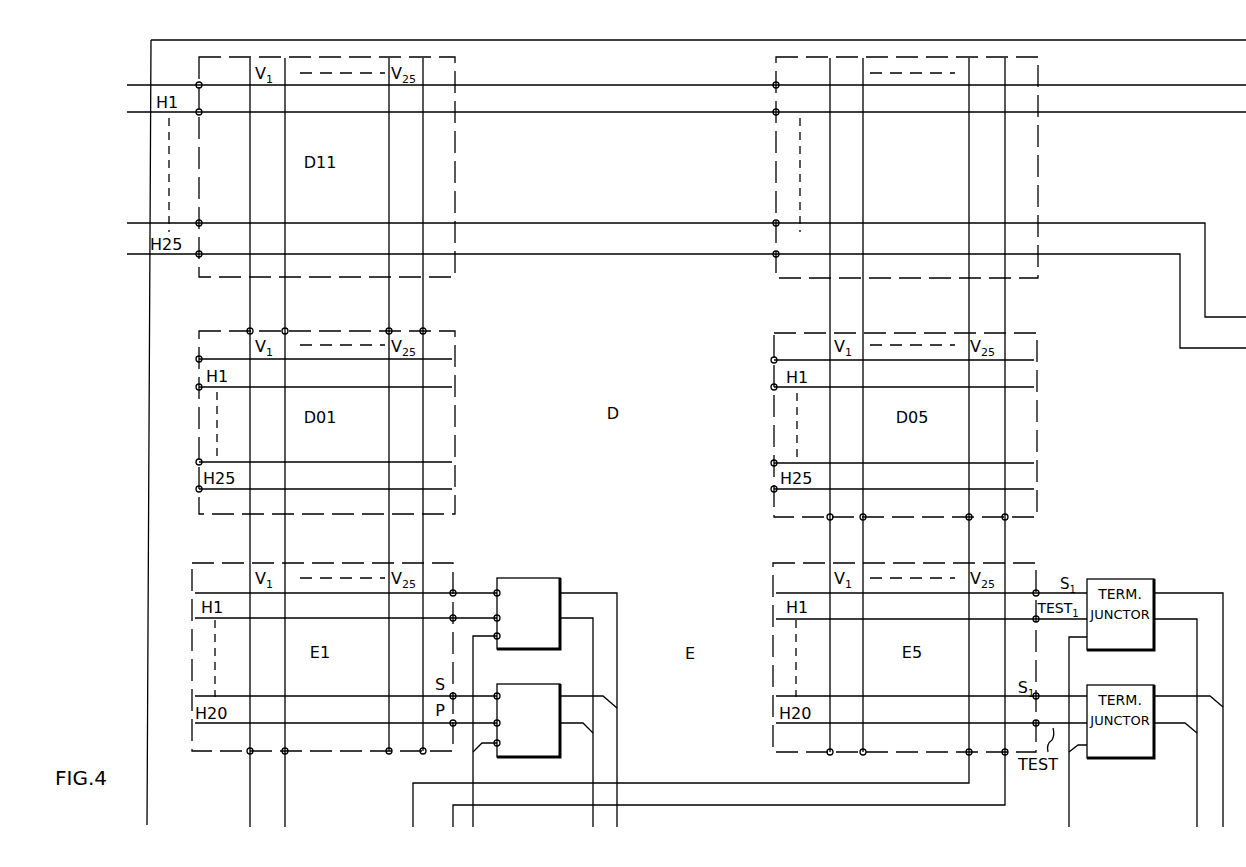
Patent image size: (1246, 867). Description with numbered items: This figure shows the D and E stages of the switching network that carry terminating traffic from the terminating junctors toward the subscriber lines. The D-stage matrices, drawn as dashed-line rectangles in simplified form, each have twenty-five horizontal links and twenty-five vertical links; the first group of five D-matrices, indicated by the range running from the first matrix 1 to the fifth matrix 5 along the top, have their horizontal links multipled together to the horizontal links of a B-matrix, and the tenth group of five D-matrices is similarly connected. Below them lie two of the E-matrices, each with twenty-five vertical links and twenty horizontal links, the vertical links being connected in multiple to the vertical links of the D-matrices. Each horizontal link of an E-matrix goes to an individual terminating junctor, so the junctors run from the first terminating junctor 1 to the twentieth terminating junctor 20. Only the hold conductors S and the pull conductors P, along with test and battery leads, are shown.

The terminating junctor 1 / first switching stage 1 is at (575, 675).
The fifth switching stage D15 5 is at (497, 73).
The terminating junctor 20 is at (586, 686).